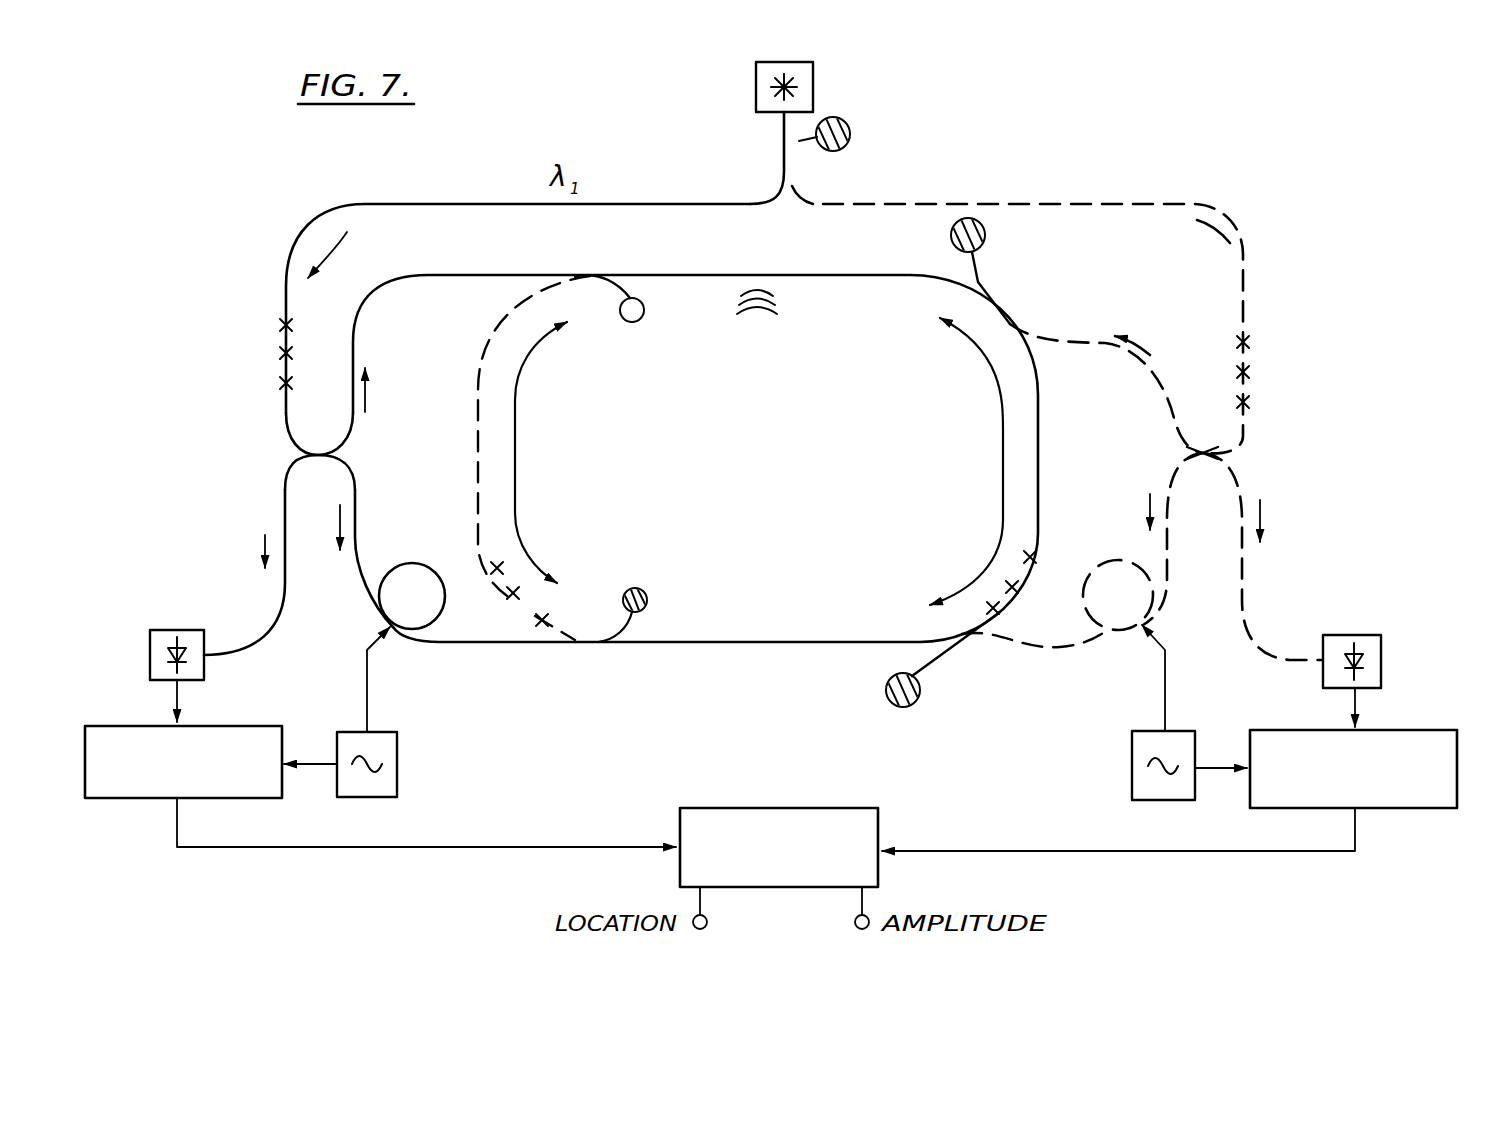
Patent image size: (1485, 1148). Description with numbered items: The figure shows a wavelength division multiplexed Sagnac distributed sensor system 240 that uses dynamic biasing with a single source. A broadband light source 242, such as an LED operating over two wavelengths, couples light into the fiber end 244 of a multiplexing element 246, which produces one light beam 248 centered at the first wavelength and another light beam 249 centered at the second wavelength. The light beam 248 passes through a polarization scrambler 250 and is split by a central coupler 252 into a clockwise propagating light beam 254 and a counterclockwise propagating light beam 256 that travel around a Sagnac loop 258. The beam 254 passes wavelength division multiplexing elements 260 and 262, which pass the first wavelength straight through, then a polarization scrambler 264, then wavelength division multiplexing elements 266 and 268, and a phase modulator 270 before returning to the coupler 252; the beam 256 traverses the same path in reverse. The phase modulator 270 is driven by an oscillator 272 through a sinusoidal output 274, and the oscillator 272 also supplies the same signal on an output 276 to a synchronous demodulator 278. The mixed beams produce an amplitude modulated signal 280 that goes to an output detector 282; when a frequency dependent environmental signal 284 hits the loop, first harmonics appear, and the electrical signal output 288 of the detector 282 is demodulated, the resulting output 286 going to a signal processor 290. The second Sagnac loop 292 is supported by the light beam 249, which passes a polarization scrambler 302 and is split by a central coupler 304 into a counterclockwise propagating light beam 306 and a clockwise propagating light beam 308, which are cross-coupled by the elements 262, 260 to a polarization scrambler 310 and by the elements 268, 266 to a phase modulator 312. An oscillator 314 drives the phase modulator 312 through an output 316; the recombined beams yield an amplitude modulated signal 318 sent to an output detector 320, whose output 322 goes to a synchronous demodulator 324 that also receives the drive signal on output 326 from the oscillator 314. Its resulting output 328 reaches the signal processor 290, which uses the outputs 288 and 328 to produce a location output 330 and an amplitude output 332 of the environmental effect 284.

The wavelength division multiplexed Sagnac distributed sensor system 240 is at (785, 248).
The broadband light source 242 is at (813, 74).
The fiber end 244 is at (782, 120).
The multiplexing element 246 is at (783, 163).
The light beam 248 is at (326, 250).
The light beam 249 is at (1240, 236).
The polarization scrambler 250 is at (280, 349).
The central coupler 252 is at (318, 458).
The clockwise propagating light beam 254 is at (368, 390).
The counterclockwise propagating light beam 256 is at (338, 528).
The Sagnac loop 258 is at (1002, 468).
The wavelength division multiplexing element 260 is at (594, 273).
The wavelength division multiplexing element 262 is at (1000, 318).
The polarization scrambler 264 is at (1012, 592).
The wavelength division multiplexing element 266 is at (960, 640).
The wavelength division multiplexing element 268 is at (602, 644).
The phase modulator 270 is at (428, 550).
The oscillator 272 is at (398, 757).
The sinusoidal output 274 is at (368, 680).
The output 276 is at (308, 760).
The synchronous demodulator 278 is at (120, 800).
The amplitude modulated signal 280 is at (262, 540).
The output detector 282 is at (173, 628).
The environmental signal 284 is at (755, 322).
The output 286 is at (170, 692).
The electrical signal output 288 is at (464, 846).
The signal processor 290 is at (784, 807).
The second Sagnac loop 292 is at (518, 468).
The polarization scrambler 302 is at (1250, 372).
The central coupler 304 is at (1204, 450).
The counterclockwise propagating light beam 306 is at (1140, 344).
The clockwise propagating light beam 308 is at (1147, 512).
The polarization scrambler 310 is at (508, 594).
The phase modulator 312 is at (1130, 562).
The oscillator 314 is at (1132, 752).
The output 316 is at (1165, 650).
The amplitude modulated signal 318 is at (1263, 525).
The output detector 320 is at (1363, 615).
The output 322 is at (1358, 703).
The synchronous demodulator 324 is at (1250, 789).
The output 326 is at (1214, 762).
The output 328 is at (996, 850).
The location output 330 is at (703, 905).
The amplitude output 332 is at (858, 903).